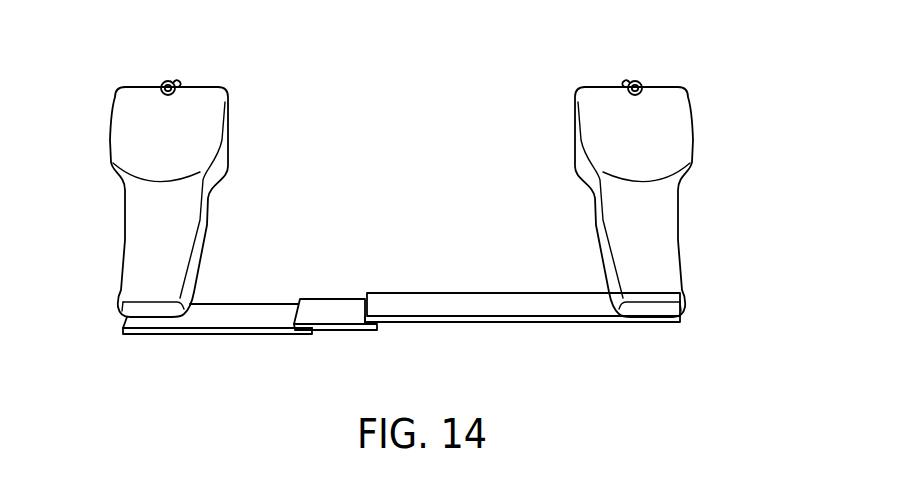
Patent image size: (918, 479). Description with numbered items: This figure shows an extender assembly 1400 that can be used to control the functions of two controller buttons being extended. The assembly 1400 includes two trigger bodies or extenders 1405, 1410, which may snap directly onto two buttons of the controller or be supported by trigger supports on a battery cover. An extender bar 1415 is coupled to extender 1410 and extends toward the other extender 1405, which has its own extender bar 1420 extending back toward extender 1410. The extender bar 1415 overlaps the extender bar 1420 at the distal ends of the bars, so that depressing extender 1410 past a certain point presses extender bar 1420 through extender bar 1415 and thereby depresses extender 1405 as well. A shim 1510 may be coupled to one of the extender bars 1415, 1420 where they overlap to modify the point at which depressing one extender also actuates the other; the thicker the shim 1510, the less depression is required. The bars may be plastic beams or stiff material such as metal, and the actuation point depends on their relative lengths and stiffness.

The extender assembly 1400 is at (736, 87).
The extender 1405 is at (133, 140).
The extender 1410 is at (672, 140).
The extender bar 1415 is at (538, 323).
The extender bar 1420 is at (220, 335).
The shim 1510 is at (338, 330).